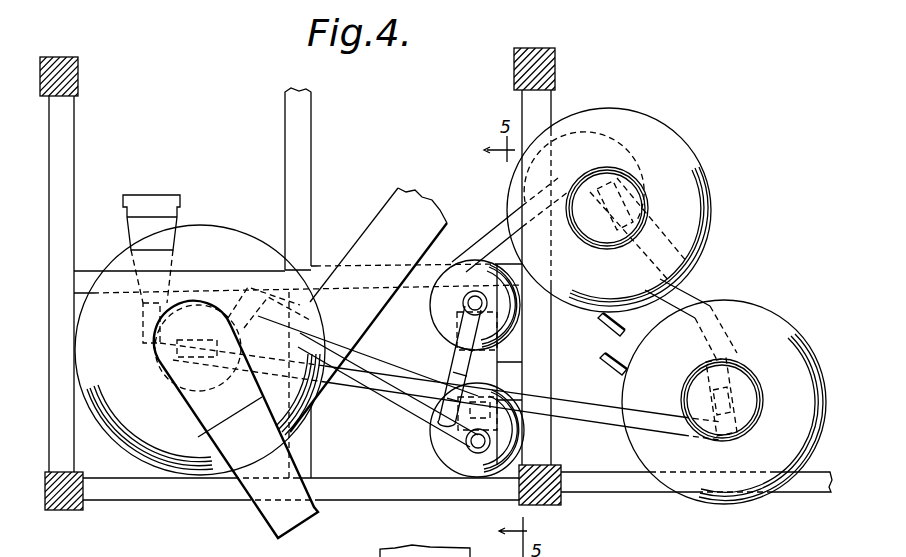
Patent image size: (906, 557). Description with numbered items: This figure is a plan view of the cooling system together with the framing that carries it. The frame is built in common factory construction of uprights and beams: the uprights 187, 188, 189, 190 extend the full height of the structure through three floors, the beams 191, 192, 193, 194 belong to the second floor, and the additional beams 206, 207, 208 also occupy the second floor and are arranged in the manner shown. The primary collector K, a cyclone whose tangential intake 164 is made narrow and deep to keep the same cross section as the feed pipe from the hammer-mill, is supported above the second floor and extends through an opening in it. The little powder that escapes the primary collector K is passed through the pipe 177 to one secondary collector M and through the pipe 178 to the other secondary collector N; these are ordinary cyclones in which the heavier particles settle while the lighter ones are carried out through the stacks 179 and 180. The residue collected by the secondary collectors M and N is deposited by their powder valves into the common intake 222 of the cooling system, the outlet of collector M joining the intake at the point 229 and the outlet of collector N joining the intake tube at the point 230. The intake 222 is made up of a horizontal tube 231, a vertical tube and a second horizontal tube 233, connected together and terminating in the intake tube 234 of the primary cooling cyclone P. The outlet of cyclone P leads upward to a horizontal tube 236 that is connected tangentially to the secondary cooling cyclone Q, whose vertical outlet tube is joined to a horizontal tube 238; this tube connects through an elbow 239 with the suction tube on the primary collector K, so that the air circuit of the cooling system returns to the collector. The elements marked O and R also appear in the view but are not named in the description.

The intake 164 is at (358, 325).
The pipe 177 is at (617, 320).
The pipe 178 is at (623, 363).
The stack 179 is at (757, 387).
The stack 180 is at (614, 192).
The upright 187 is at (78, 70).
The upright 188 is at (75, 510).
The upright 189 is at (558, 508).
The upright 190 is at (514, 80).
The beam 191 is at (65, 175).
The beam 192 is at (387, 490).
The beam 193 is at (643, 483).
The beam 194 is at (540, 340).
The beam 206 is at (300, 160).
The beam 207 is at (318, 277).
The beam 208 is at (312, 443).
The intake 222 is at (594, 388).
The point 229 is at (633, 205).
The point 230 is at (752, 425).
The horizontal tube 231 is at (610, 414).
The second horizontal tube 233 is at (677, 297).
The intake tube 234 is at (490, 225).
The horizontal tube 236 is at (457, 355).
The horizontal tube 238 is at (400, 393).
The elbow 239 is at (246, 290).
The primary collector K is at (205, 238).
The block O is at (160, 197).
The primary cooling cyclone P is at (450, 265).
The secondary cooling cyclone Q is at (437, 446).
The plate R is at (487, 367).
The secondary collector M is at (700, 193).
The secondary collector N is at (803, 357).